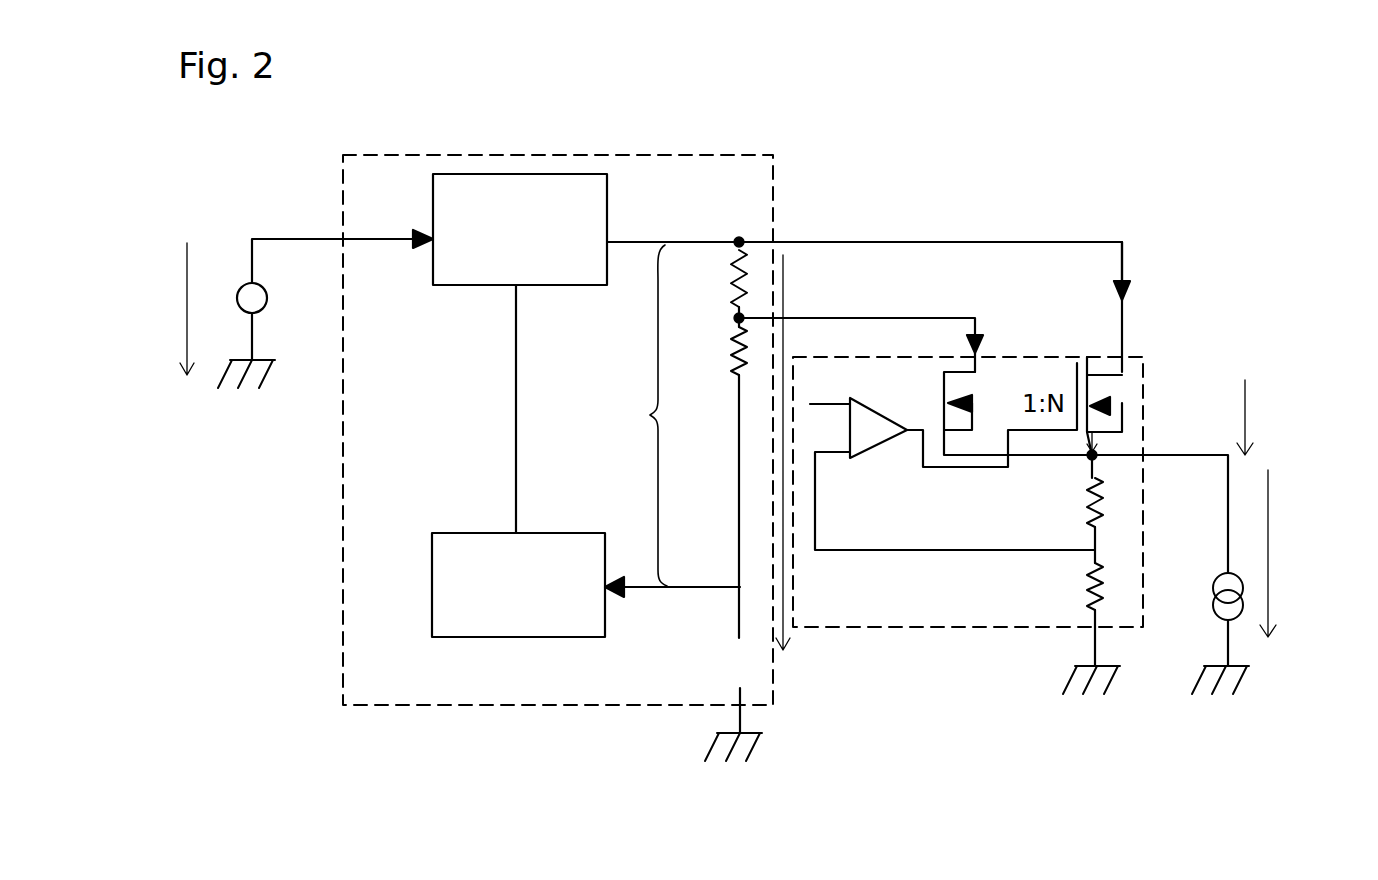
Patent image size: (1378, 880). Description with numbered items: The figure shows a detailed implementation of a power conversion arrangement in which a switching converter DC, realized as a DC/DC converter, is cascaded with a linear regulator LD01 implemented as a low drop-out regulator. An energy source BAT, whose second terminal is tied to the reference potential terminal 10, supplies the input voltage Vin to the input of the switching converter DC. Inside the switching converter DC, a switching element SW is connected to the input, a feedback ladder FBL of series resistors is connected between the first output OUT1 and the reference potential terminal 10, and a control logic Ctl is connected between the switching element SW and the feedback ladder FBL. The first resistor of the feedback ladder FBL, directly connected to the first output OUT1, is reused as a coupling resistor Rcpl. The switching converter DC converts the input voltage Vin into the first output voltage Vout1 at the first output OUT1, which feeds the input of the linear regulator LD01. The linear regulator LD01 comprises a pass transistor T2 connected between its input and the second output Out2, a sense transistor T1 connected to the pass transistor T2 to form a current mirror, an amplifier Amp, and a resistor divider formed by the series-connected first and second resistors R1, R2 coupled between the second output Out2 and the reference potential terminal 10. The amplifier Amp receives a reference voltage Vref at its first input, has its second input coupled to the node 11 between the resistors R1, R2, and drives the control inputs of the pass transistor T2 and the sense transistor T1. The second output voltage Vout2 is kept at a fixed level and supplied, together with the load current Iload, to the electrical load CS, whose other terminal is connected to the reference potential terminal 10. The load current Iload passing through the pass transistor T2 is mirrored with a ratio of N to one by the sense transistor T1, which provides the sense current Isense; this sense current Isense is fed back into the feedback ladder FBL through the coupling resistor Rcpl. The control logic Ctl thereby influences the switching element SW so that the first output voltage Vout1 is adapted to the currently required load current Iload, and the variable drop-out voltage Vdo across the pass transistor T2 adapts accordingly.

The energy source BAT is at (243, 283).
The input voltage Vin is at (175, 312).
The switching converter DC is at (430, 155).
The switching element SW is at (515, 172).
The control logic Ctl is at (447, 532).
The feedback ladder FBL is at (651, 415).
The coupling resistor Rcpl is at (737, 263).
The node 11 is at (722, 322).
The first output OUT1 is at (739, 241).
The first output voltage Vout1 is at (790, 300).
The sense current Isense is at (973, 333).
The sense transistor T1 is at (983, 393).
The pass transistor T2 is at (1120, 392).
The reference voltage Vref is at (831, 391).
The amplifier Amp is at (880, 447).
The load current Iload is at (1100, 443).
The drop-out voltage Vdo is at (1270, 417).
The second output Out2 is at (1228, 455).
The second resistor R2 is at (1075, 503).
The first resistor R1 is at (1078, 590).
The electrical load CS is at (1213, 592).
The second output voltage Vout2 is at (1307, 553).
The linear regulator LD01 is at (825, 630).
The reference potential terminal 10 is at (722, 768).